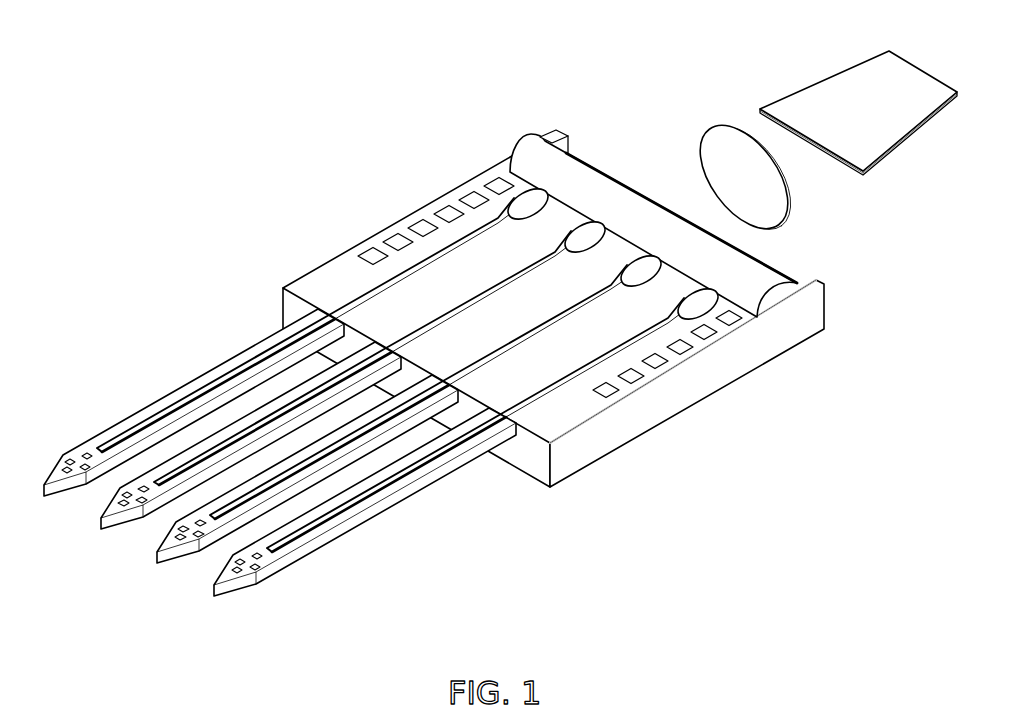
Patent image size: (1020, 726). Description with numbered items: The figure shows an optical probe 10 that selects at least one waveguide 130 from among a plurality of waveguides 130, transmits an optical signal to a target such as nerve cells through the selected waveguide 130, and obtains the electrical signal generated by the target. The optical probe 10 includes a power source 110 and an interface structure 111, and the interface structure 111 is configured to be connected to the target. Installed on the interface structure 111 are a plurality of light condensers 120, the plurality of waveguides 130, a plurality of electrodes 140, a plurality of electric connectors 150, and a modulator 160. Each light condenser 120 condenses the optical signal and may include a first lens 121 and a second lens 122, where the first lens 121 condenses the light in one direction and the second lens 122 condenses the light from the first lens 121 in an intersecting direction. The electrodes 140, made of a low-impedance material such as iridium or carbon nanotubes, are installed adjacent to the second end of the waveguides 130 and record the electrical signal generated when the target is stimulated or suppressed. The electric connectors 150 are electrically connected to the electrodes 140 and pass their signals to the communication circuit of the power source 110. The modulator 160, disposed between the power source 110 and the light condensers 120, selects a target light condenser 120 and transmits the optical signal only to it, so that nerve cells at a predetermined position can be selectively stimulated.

The optical probe 10 is at (355, 128).
The power source 110 is at (828, 88).
The interface structure 111 is at (658, 382).
The light condensers 120 is at (631, 188).
The first lens 121 is at (548, 162).
The second lens 122 is at (597, 217).
The waveguides 130 is at (343, 305).
The electrodes 140 is at (68, 457).
The electric connectors 150 is at (372, 250).
The modulator 160 is at (735, 148).